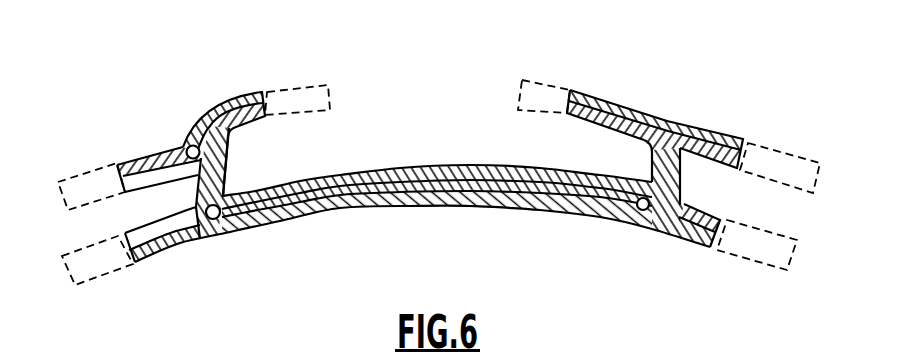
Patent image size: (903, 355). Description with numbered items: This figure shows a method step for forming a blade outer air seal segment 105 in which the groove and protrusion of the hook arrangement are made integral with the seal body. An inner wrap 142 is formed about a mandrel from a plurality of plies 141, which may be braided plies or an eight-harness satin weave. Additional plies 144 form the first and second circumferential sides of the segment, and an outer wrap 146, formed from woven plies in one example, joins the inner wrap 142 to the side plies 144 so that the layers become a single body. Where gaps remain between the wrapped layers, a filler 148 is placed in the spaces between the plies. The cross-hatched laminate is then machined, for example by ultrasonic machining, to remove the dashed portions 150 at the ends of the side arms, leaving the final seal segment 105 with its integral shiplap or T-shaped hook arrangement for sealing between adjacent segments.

The seal segment 105 is at (770, 90).
The plies 141 is at (377, 204).
The inner wrap 142 is at (427, 164).
The plies 144 is at (677, 183).
The outer wrap 146 is at (641, 116).
The filler 148 is at (181, 144).
The portions 150 is at (309, 86).